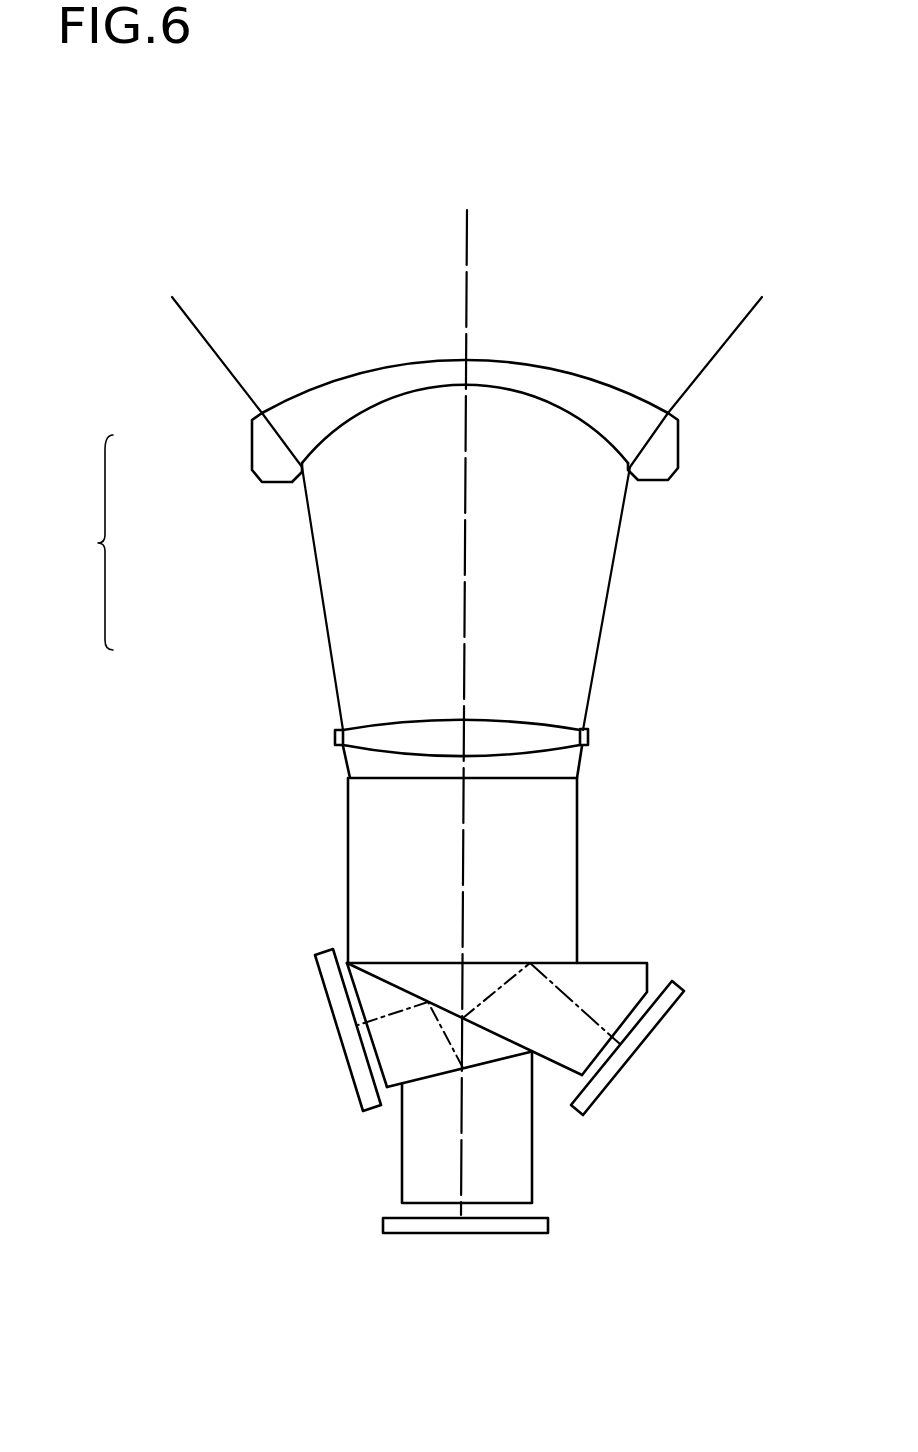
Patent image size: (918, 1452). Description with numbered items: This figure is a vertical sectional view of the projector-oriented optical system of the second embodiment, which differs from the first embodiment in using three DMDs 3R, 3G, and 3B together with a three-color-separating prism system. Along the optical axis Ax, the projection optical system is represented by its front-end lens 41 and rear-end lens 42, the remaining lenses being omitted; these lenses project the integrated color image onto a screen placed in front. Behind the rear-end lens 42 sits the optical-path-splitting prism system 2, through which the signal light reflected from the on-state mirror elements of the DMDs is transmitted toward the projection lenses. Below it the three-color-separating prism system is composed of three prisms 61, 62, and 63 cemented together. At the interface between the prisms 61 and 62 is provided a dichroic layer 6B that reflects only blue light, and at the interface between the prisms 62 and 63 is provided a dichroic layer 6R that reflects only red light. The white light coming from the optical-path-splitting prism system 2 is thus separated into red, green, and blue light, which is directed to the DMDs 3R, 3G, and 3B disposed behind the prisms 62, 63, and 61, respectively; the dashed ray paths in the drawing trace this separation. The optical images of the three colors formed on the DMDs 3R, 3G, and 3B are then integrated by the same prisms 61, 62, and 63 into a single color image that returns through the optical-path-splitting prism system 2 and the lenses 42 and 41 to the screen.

The optical axis Ax is at (467, 240).
The front-end lens 41 is at (253, 445).
The rear-end lens 42 is at (340, 740).
The optical-path-splitting prism system 2 is at (552, 840).
The first prism 61 is at (606, 985).
The second prism 62 is at (395, 1068).
The third prism 63 is at (520, 1157).
The dichroic layer reflecting B light 6B is at (388, 980).
The dichroic layer reflecting R light 6R is at (507, 1058).
The DMD for R light 3R is at (325, 948).
The DMD for B light 3B is at (683, 988).
The DMD for G light 3G is at (400, 1237).